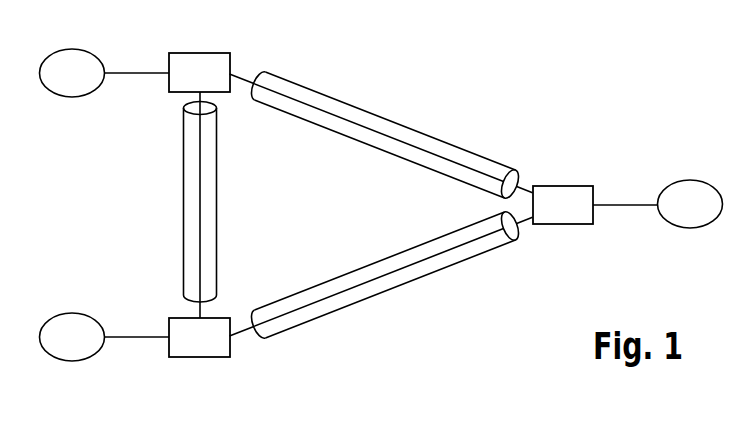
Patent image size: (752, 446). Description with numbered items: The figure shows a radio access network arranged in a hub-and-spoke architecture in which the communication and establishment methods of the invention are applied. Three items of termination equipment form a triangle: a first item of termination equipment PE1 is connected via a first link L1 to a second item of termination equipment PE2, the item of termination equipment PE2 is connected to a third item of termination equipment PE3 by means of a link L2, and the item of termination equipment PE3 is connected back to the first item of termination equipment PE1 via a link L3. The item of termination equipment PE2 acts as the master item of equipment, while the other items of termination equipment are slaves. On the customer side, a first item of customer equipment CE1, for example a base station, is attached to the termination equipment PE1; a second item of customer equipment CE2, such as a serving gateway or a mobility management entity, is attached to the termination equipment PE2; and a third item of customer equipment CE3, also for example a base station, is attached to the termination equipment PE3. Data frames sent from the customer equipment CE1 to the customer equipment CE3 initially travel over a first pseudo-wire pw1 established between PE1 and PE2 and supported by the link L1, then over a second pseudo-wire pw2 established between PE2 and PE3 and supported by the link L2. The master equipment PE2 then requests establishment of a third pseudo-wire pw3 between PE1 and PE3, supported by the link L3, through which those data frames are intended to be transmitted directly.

The first item of customer equipment CE1 is at (94, 82).
The second item of customer equipment CE2 is at (714, 213).
The third item of customer equipment CE3 is at (94, 346).
The first item of termination equipment PE1 is at (220, 81).
The second item of termination equipment PE2 is at (584, 213).
The third item of termination equipment PE3 is at (220, 346).
The first pseudo-wire pw1 is at (327, 92).
The second pseudo-wire pw2 is at (330, 318).
The third pseudo-wire pw3 is at (182, 158).
The first link L1 is at (237, 75).
The link L2 is at (243, 333).
The link L3 is at (197, 305).